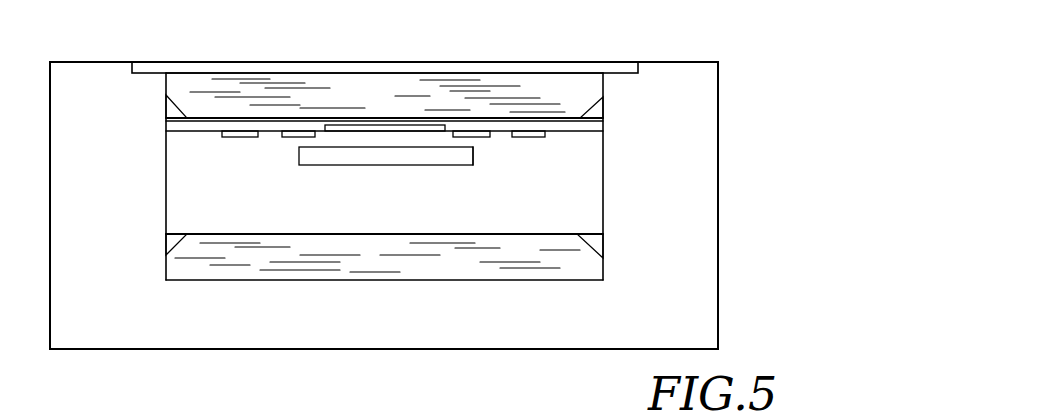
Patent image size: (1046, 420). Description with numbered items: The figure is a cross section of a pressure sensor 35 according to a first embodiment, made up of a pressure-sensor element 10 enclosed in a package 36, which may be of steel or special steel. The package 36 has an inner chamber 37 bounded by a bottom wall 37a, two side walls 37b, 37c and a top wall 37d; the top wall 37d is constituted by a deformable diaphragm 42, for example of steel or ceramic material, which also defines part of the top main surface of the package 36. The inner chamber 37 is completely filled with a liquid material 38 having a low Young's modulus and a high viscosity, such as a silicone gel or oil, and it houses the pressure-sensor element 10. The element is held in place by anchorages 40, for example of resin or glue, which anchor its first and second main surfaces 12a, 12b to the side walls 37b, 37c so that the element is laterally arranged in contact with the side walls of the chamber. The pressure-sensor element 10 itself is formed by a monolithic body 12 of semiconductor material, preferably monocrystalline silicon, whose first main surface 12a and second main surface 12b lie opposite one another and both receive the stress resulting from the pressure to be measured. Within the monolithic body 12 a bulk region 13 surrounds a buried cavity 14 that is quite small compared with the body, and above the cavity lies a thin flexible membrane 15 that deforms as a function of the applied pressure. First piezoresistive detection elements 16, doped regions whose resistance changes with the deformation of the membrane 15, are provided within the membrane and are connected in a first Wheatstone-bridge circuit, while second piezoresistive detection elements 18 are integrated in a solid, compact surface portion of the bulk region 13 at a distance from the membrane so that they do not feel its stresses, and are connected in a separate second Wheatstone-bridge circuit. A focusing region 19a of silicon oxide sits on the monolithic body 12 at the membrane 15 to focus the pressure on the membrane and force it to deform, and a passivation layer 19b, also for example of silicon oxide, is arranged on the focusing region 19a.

The pressure-sensor element 10 is at (619, 182).
The monolithic body 12 is at (187, 215).
The first main surface 12a is at (563, 115).
The second main surface 12b is at (558, 241).
The bulk region 13 is at (503, 223).
The cavity 14 is at (458, 156).
The membrane 15 is at (372, 140).
The first piezoresistive detection elements 16 is at (295, 137).
The second piezoresistive detection elements 18 is at (247, 137).
The focusing region 19a is at (432, 127).
The passivation layer 19b is at (166, 129).
The pressure sensor 35 is at (419, 205).
The package 36 is at (727, 292).
The inner chamber 37 is at (243, 272).
The bottom wall 37a is at (424, 289).
The side wall 37b is at (162, 182).
The side wall 37c is at (611, 214).
The top wall 37d is at (416, 64).
The liquid material 38 is at (343, 105).
The anchorages 40 is at (166, 108).
The deformable diaphragm 42 is at (230, 68).